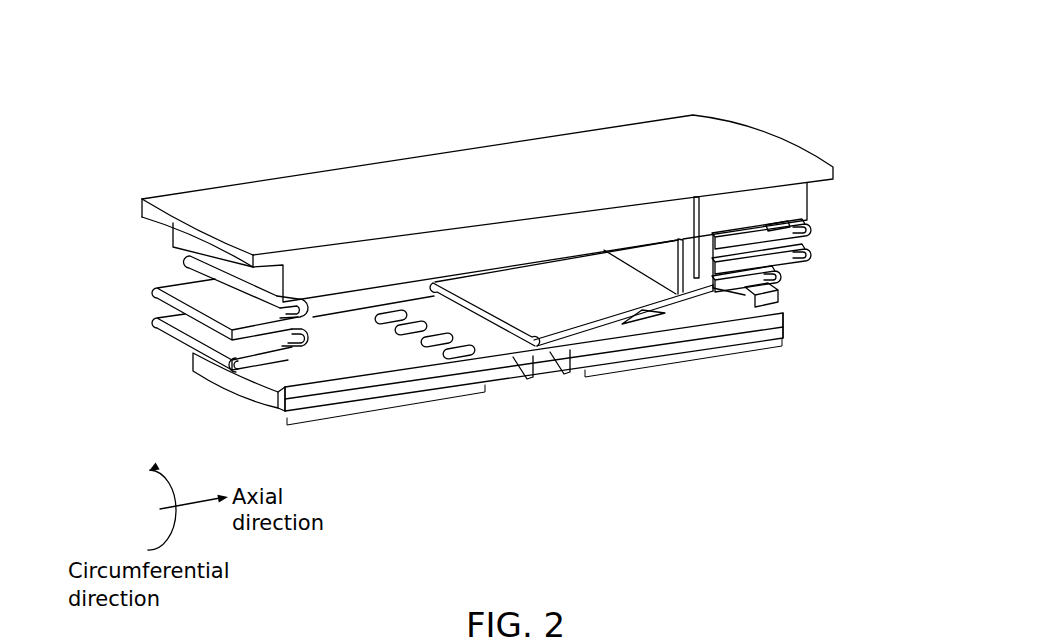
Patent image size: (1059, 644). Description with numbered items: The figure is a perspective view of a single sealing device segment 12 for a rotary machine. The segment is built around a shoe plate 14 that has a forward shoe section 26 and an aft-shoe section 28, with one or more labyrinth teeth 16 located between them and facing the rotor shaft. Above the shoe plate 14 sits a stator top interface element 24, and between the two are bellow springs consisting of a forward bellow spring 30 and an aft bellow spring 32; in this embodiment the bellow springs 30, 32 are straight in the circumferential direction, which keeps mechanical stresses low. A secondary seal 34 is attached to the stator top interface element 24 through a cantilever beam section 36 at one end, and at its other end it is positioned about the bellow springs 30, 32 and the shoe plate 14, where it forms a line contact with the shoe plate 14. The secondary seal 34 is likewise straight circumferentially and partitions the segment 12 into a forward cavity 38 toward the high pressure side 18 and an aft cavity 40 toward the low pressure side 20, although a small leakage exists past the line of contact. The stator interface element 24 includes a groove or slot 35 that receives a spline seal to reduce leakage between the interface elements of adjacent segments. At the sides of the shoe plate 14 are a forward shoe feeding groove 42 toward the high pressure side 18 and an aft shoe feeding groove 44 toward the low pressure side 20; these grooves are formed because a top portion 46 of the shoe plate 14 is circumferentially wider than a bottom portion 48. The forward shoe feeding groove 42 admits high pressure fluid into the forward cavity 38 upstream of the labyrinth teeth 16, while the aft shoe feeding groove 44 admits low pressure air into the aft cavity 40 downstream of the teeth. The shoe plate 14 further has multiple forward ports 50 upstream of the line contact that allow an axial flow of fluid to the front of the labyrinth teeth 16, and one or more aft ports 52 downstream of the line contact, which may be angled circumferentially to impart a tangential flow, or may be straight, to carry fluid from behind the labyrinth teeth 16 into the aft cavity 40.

The sealing device segment 12 is at (772, 51).
The shoe plate 14 is at (200, 381).
The labyrinth teeth 16 is at (557, 370).
The high pressure side 18 is at (140, 274).
The low pressure side 20 is at (804, 290).
The stator top interface element 24 is at (245, 188).
The forward shoe section 26 is at (386, 408).
The aft shoe section 28 is at (683, 360).
The forward bellow spring 30 is at (188, 336).
The aft bellow spring 32 is at (813, 258).
The secondary seal 34 is at (547, 279).
The groove or slot 35 is at (700, 199).
The cantilever beam section 36 is at (709, 294).
The forward cavity 38 is at (466, 326).
The aft cavity 40 is at (676, 304).
The forward shoe feeding groove 42 is at (275, 409).
The aft shoe feeding groove 44 is at (792, 334).
The top portion 46 is at (325, 390).
The bottom portion 48 is at (347, 398).
The forward ports 50 is at (437, 335).
The aft ports 52 is at (644, 312).